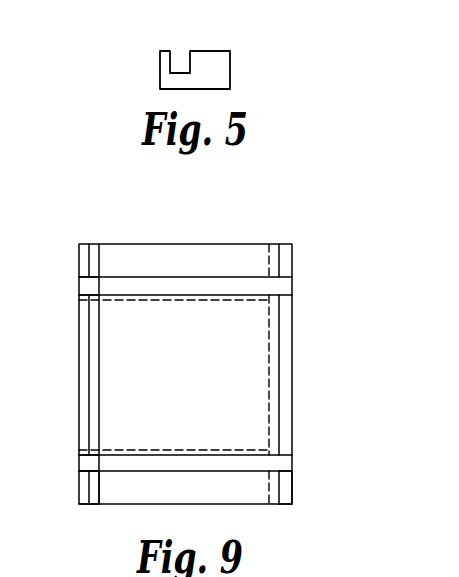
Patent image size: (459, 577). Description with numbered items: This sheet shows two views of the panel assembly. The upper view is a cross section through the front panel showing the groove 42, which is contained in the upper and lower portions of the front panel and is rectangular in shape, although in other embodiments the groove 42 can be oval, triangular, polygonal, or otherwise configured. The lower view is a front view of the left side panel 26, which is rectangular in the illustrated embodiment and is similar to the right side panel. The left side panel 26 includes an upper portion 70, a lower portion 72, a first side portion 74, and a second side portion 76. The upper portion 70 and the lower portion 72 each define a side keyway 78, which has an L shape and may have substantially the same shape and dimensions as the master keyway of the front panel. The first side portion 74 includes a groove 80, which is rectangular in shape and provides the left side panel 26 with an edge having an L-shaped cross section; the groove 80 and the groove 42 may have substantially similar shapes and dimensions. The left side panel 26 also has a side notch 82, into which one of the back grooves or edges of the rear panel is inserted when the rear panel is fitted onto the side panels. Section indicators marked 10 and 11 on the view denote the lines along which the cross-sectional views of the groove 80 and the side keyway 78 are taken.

In FIG. 5, the groove 42 is at (180, 70).
In FIG. 9, the left side panel 26 is at (233, 397).
In FIG. 9, the upper portion 70 is at (190, 253).
In FIG. 9, the lower portion 72 is at (133, 493).
In FIG. 9, the first side portion 74 is at (292, 412).
In FIG. 9, the second side portion 76 is at (79, 372).
In FIG. 9, the side keyway 78 is at (93, 285).
In FIG. 9, the groove 80 is at (94, 503).
In FIG. 9, the side notch 82 is at (287, 493).
In FIG. 9, the section line 10 is at (25, 512).
In FIG. 9, the section line 11 is at (187, 222).